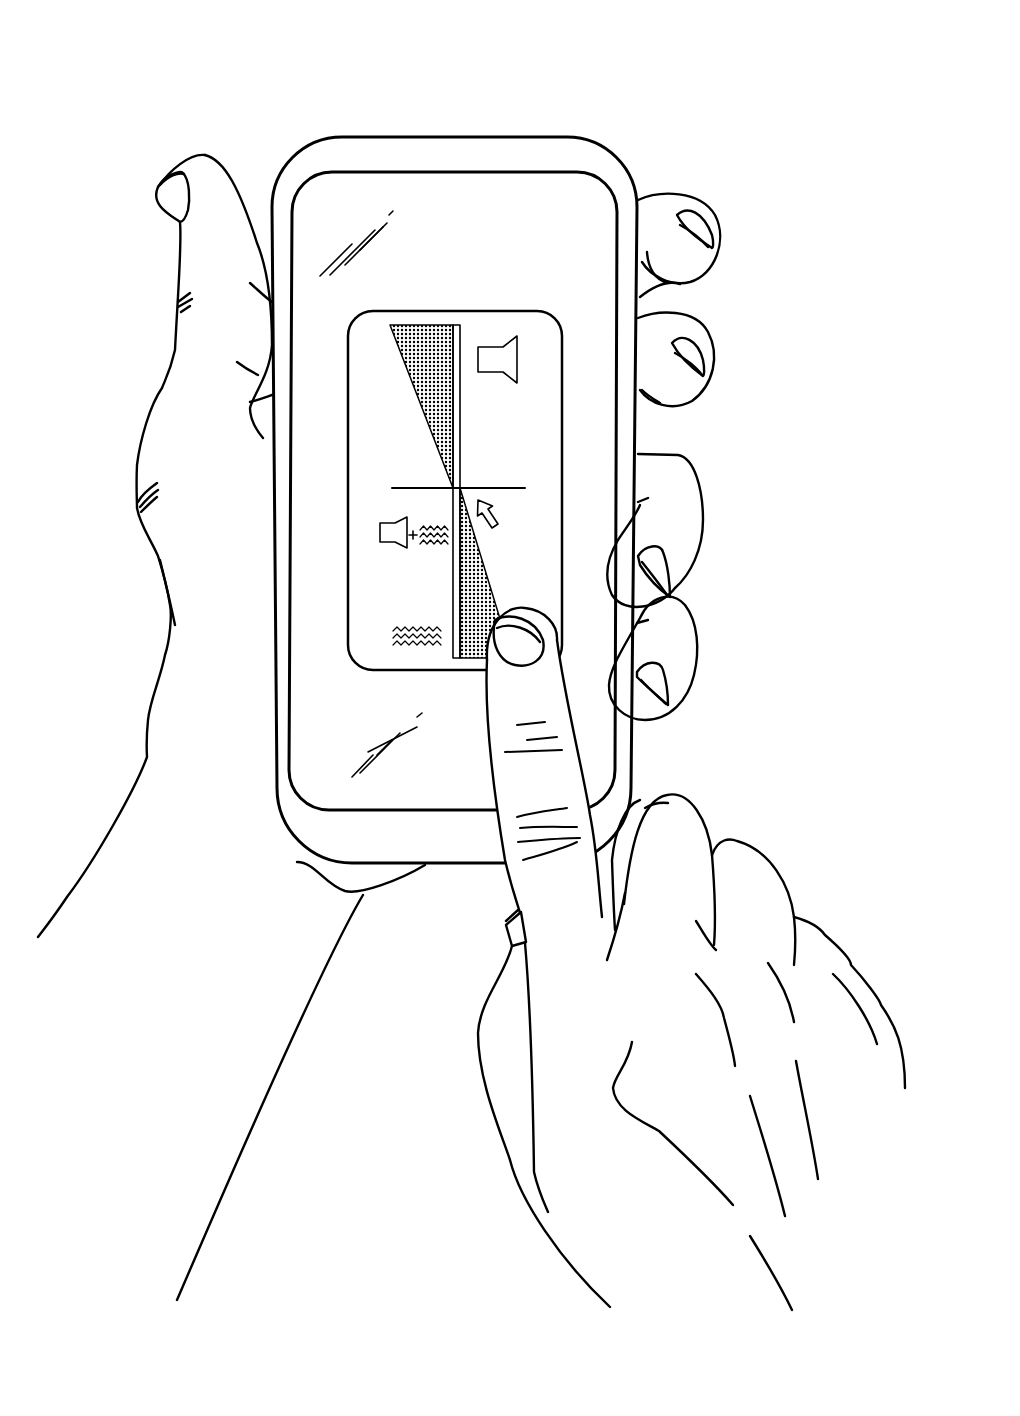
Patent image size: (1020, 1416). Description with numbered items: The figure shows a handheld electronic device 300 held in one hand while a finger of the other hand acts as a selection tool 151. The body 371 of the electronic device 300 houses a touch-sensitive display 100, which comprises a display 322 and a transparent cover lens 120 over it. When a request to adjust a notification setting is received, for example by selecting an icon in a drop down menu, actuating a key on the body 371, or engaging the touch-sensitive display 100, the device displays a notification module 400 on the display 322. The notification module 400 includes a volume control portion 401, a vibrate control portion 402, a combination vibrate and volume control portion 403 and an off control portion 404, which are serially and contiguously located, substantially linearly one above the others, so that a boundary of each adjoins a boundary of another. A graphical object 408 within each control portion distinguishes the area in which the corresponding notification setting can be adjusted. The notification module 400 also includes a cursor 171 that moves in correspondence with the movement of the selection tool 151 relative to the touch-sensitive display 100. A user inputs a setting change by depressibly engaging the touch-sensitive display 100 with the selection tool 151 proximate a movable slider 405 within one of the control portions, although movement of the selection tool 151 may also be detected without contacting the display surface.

The electronic device 300 is at (617, 38).
The touch-sensitive display 100 is at (553, 170).
The display 322 is at (335, 205).
The transparent cover lens 120 is at (580, 437).
The notification module 400 is at (562, 415).
The volume control portion 401 is at (406, 400).
The vibrate control portion 402 is at (449, 613).
The combination vibrate and volume control portion 403 is at (449, 573).
The off control portion 404 is at (449, 480).
The movable slider 405 is at (510, 488).
The graphical object 408 is at (517, 358).
The cursor 171 is at (500, 512).
The selection tool 151 is at (522, 685).
The body 371 is at (633, 752).